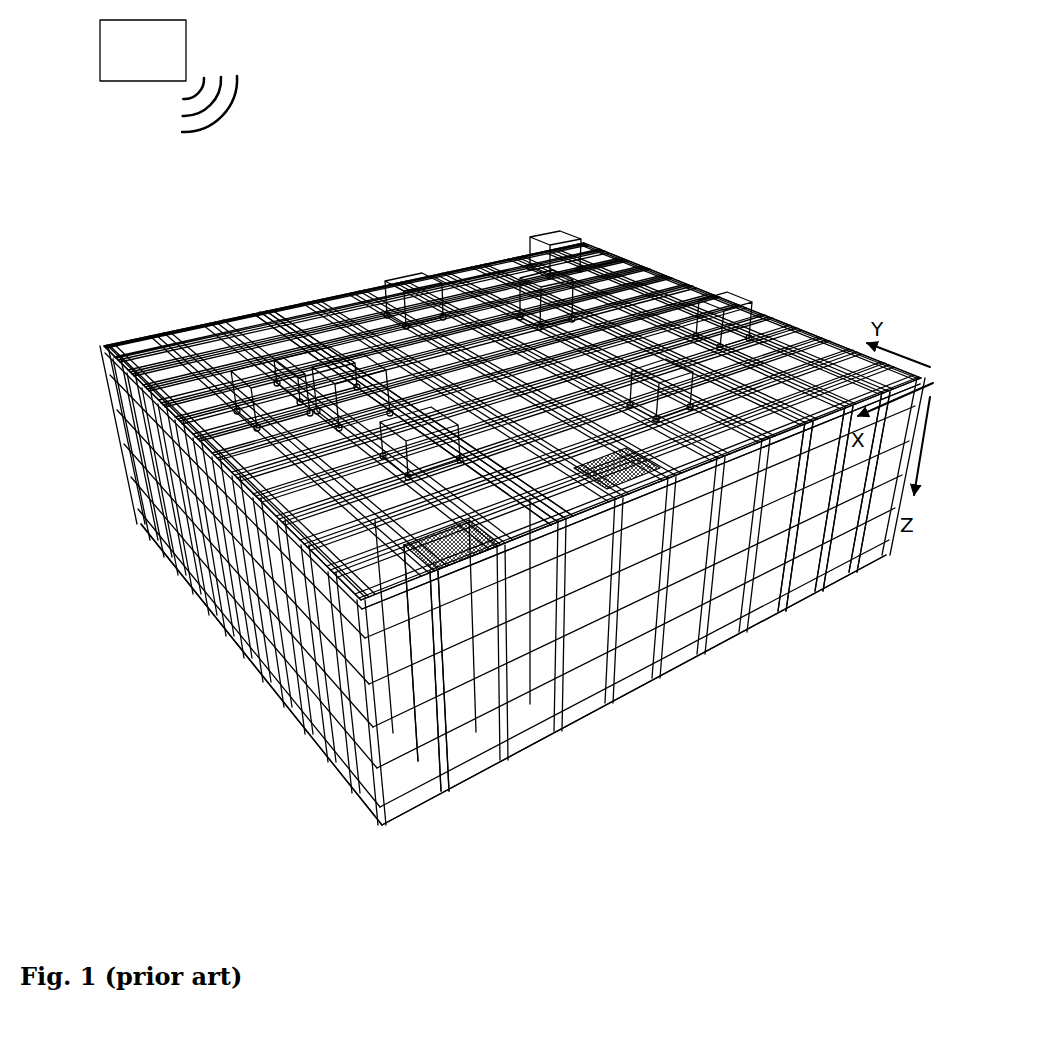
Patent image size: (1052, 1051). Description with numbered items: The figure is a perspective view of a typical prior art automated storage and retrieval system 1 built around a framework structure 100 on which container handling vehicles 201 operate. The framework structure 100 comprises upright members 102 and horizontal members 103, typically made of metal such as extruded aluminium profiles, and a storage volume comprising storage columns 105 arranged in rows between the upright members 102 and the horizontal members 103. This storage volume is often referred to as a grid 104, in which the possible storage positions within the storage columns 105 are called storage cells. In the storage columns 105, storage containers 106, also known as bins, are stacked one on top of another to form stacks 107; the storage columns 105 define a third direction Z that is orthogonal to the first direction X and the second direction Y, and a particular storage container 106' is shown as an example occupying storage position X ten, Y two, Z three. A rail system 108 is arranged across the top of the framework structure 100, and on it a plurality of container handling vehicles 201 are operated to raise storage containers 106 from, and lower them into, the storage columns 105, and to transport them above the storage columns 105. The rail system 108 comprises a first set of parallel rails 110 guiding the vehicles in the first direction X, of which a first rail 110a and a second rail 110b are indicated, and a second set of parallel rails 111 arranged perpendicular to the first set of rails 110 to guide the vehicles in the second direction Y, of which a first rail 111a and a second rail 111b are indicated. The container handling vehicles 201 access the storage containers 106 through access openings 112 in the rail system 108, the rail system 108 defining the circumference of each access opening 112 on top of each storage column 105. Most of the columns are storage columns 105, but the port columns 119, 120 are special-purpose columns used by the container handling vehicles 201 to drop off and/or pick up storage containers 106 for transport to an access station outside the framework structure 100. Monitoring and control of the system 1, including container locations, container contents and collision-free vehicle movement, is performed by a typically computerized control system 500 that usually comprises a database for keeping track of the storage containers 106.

The automated storage and retrieval system 1 is at (453, 146).
The framework structure 100 is at (120, 507).
The upright members 102 is at (365, 710).
The horizontal members 103 is at (718, 562).
The grid 104 is at (98, 372).
The storage columns 105 is at (283, 611).
The storage containers 106 is at (504, 707).
The storage container 106' is at (505, 688).
The stacks 107 is at (797, 593).
The rail system 108 is at (848, 342).
The first set of parallel rails 110 is at (797, 373).
The first rail in a first direction X 110a is at (246, 322).
The second rail in a first direction X 110b is at (262, 322).
The second set of parallel rails 111 is at (357, 300).
The first rail in a second direction Y 111a is at (207, 327).
The second rail in a second direction Y 111b is at (270, 318).
The access openings 112 is at (752, 352).
The port column 119 is at (455, 550).
The port column 120 is at (630, 473).
The container handling vehicles 201 is at (578, 238).
The control system 500 is at (168, 76).